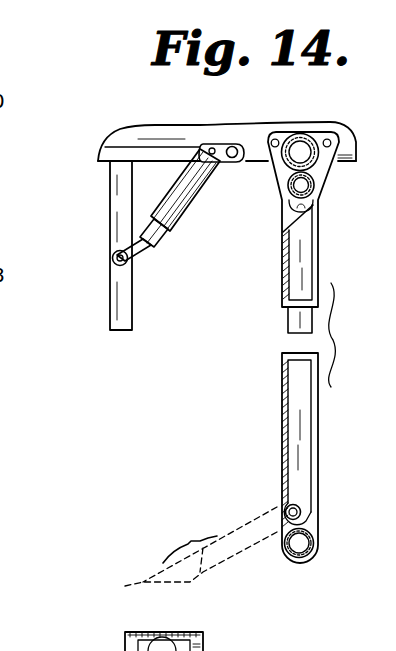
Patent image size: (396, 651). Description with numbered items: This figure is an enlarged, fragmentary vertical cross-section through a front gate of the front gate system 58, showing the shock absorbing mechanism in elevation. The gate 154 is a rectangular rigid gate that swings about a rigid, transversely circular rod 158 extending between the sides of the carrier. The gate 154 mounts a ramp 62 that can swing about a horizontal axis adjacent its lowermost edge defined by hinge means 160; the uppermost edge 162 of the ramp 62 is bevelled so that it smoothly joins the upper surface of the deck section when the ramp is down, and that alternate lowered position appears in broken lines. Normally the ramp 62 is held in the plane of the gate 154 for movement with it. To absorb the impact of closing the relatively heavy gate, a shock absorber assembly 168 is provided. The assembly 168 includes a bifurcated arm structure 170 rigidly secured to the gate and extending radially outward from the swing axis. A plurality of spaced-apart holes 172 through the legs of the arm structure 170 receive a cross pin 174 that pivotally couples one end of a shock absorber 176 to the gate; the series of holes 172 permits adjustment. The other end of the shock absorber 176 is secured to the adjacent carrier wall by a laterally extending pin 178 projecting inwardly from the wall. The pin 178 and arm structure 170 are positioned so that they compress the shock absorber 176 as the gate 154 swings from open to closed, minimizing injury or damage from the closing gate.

The front gate system 58 is at (322, 238).
The ramp 62 is at (279, 279).
The gate 154 is at (322, 532).
The rod 158 is at (303, 135).
The hinge means 160 is at (300, 496).
The uppermost edge 162 is at (310, 195).
The shock absorber assembly 168 is at (190, 221).
The bifurcated arm structure 170 is at (258, 163).
The holes 172 is at (192, 165).
The cross pin 174 is at (236, 143).
The shock absorber 176 is at (205, 138).
The pin 178 is at (112, 263).